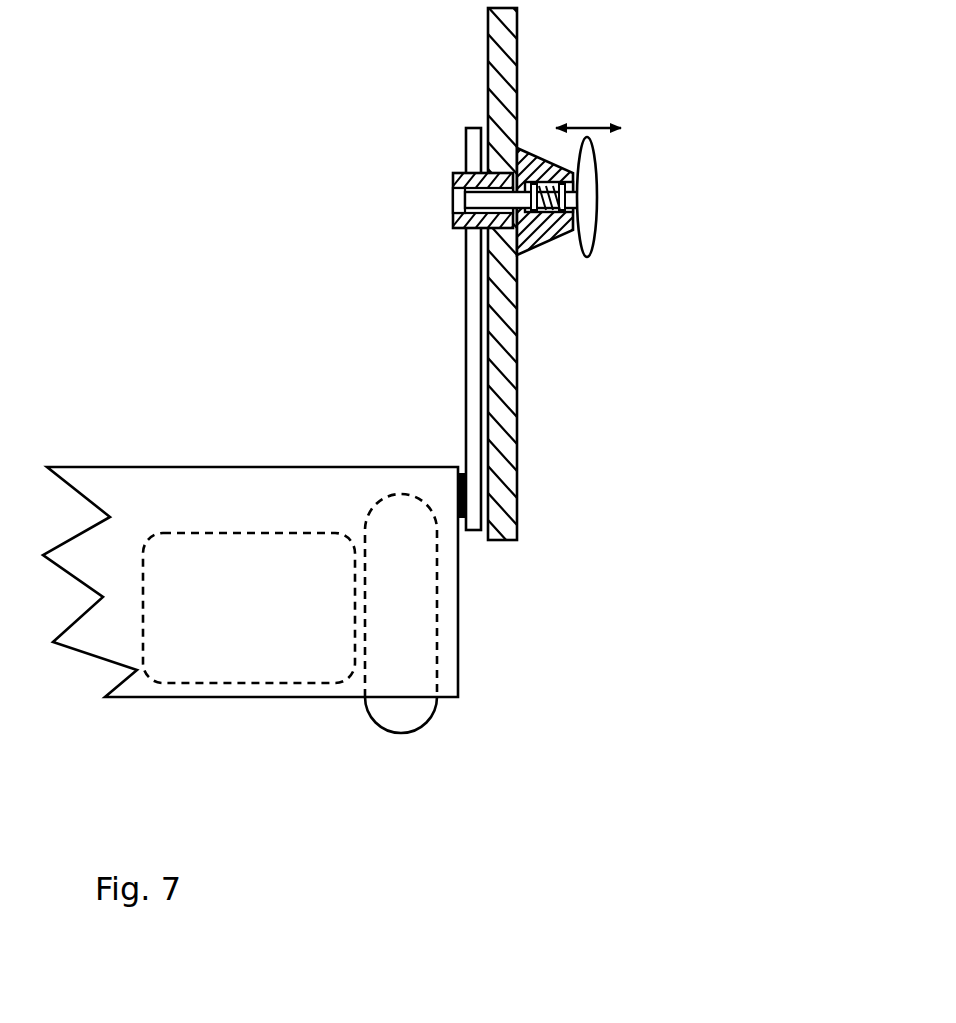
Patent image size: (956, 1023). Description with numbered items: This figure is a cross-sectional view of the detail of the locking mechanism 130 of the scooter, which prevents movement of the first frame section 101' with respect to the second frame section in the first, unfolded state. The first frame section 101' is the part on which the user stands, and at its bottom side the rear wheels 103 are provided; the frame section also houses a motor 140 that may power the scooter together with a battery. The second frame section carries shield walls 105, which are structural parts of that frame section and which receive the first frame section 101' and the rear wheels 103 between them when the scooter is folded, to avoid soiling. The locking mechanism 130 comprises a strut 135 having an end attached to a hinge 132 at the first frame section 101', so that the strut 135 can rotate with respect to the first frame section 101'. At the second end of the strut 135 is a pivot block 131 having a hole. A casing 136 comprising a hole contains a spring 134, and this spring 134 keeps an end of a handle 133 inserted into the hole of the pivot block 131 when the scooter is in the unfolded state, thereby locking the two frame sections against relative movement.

The first frame section 101' is at (276, 589).
The shield walls 105 is at (503, 432).
The strut 135 is at (472, 362).
The pivot block 131 is at (457, 172).
The locking mechanism 130 is at (592, 227).
The handle 133 is at (590, 215).
The spring 134 is at (548, 215).
The casing 136 is at (532, 247).
The hinge 132 is at (465, 507).
The motor 140 is at (207, 655).
The rear wheels 103 is at (413, 710).